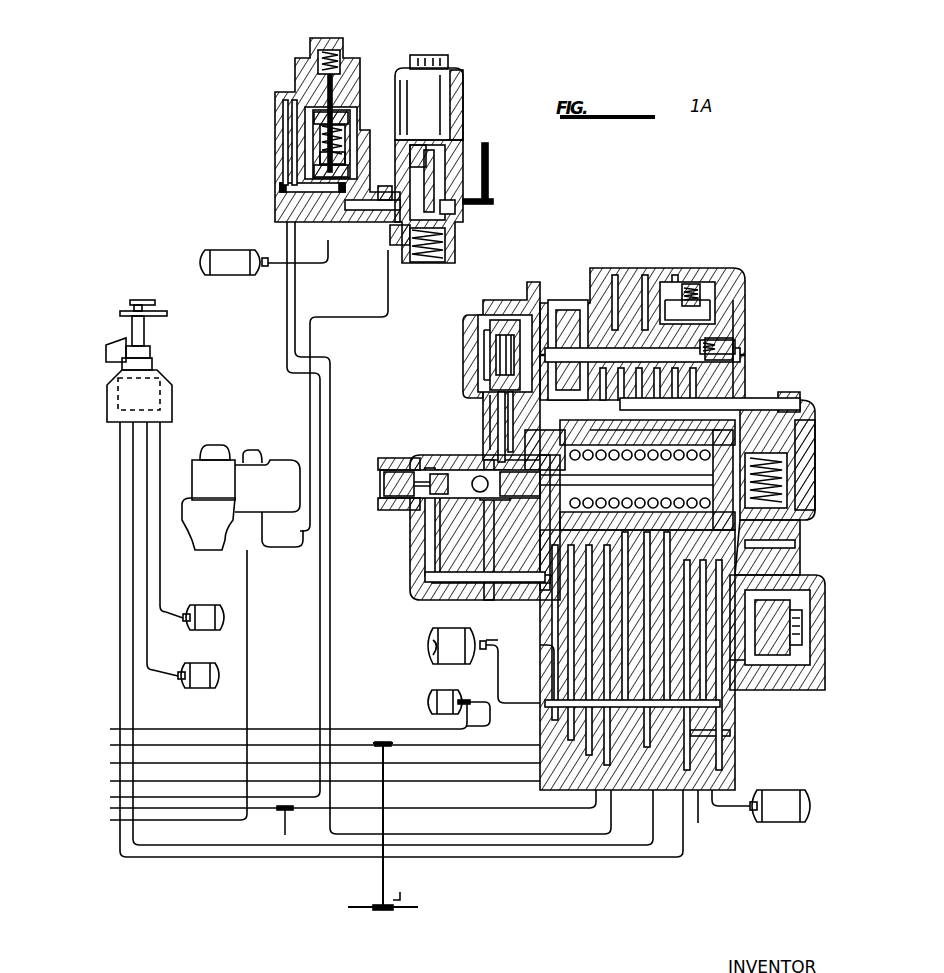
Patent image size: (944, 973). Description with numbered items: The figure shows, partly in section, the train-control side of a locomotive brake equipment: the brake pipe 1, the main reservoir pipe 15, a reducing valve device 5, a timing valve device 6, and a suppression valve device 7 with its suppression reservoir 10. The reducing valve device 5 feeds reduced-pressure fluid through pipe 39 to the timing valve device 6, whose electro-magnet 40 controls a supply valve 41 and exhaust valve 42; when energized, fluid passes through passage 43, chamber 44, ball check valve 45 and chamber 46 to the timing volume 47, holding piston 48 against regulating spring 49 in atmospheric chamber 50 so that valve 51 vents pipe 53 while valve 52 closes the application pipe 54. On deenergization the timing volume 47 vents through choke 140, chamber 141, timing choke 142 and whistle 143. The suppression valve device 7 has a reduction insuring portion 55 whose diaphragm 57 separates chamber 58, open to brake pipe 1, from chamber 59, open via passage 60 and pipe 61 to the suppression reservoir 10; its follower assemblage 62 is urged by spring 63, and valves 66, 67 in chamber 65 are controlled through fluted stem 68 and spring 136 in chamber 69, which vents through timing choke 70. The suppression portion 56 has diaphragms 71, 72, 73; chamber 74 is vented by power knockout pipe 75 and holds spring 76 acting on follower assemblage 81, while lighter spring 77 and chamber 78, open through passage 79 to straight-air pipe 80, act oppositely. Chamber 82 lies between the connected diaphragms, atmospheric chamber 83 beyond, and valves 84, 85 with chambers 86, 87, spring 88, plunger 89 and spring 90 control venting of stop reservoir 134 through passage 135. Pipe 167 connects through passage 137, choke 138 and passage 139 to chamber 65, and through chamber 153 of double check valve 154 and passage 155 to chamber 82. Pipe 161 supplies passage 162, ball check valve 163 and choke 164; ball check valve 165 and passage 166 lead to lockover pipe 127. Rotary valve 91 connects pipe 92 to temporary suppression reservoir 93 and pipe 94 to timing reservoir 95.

The brake pipe 1 is at (110, 745).
The reducing valve device 5 is at (236, 458).
The timing valve device 6 is at (470, 135).
The suppression valve device 7 is at (588, 514).
The suppression reservoir 10 is at (425, 693).
The main reservoir pipe 15 is at (247, 605).
The pipe 39 is at (330, 320).
The electro-magnet 40 is at (465, 92).
The supply valve 41 is at (458, 207).
The exhaust valve 42 is at (465, 128).
The passage 43 is at (395, 240).
The chamber 44 is at (415, 145).
The non-return ball check valve 45 is at (385, 192).
The chamber 46 is at (312, 186).
The timing volume 47 is at (232, 250).
The piston 48 is at (320, 160).
The helical regulating spring 49 is at (314, 136).
The atmospheric chamber 50 is at (343, 130).
The valve 51 is at (340, 100).
The valve 52 is at (335, 78).
The pipe 53 is at (295, 310).
The application pipe 54 is at (288, 343).
The reduction insuring portion 55 is at (462, 325).
The suppression portion 56 is at (795, 468).
The flexible diaphragm 57 is at (528, 290).
The chamber 58 is at (568, 342).
The chamber 59 is at (515, 320).
The passage 60 is at (486, 395).
The pipe 61 is at (110, 729).
The follower assemblage 62 is at (580, 290).
The helical spring 63 is at (488, 330).
The chamber 65 is at (648, 300).
The valve 66 is at (631, 384).
The valve 67 is at (692, 384).
The fluted stem 68 is at (738, 358).
The chamber 69 is at (735, 300).
The timing choke 70 is at (720, 340).
The flexible diaphragm 71 is at (770, 542).
The flexible diaphragm 72 is at (490, 420).
The flexible diaphragm 73 is at (525, 445).
The chamber 74 is at (720, 400).
The power knockout pipe 75 is at (110, 808).
The helical spring 76 is at (658, 478).
The helical spring 77 is at (788, 490).
The chamber 78 is at (795, 440).
The passage 79 is at (790, 395).
The straight-air pipe 80 is at (700, 825).
The follower assemblage 81 is at (494, 642).
The chamber 82 is at (430, 655).
The atmospheric chamber 83 is at (485, 527).
The valve 84 is at (450, 470).
The valve 85 is at (405, 498).
The chamber 86 is at (438, 498).
The chamber 87 is at (380, 466).
The helical spring 88 is at (380, 503).
The plunger 89 is at (480, 495).
The helical spring 90 is at (626, 482).
The rotary valve 91 is at (165, 390).
The pipe 92 is at (120, 470).
The temporary suppression reservoir 93 is at (212, 630).
The pipe 94 is at (135, 583).
The timing reservoir 95 is at (210, 688).
The lockover pipe 127 is at (110, 763).
The stop reservoir 134 is at (432, 648).
The passage 135 is at (392, 566).
The helical spring 136 is at (745, 345).
The passage 137 is at (780, 660).
The choke 138 is at (695, 703).
The passage 139 is at (548, 647).
The choke 140 is at (368, 212).
The chamber 141 is at (430, 147).
The timing choke 142 is at (456, 237).
The pneumatically operated whistle 143 is at (490, 175).
The chamber 153 is at (780, 600).
The double check valve 154 is at (780, 700).
The passage 155 is at (788, 552).
The pipe 161 is at (110, 781).
The passage 162 is at (702, 288).
The non-return ball check valve 163 is at (665, 285).
The choke 164 is at (692, 246).
The non-return ball check valve 165 is at (628, 285).
The passage 166 is at (636, 280).
The pipe 167 is at (118, 854).